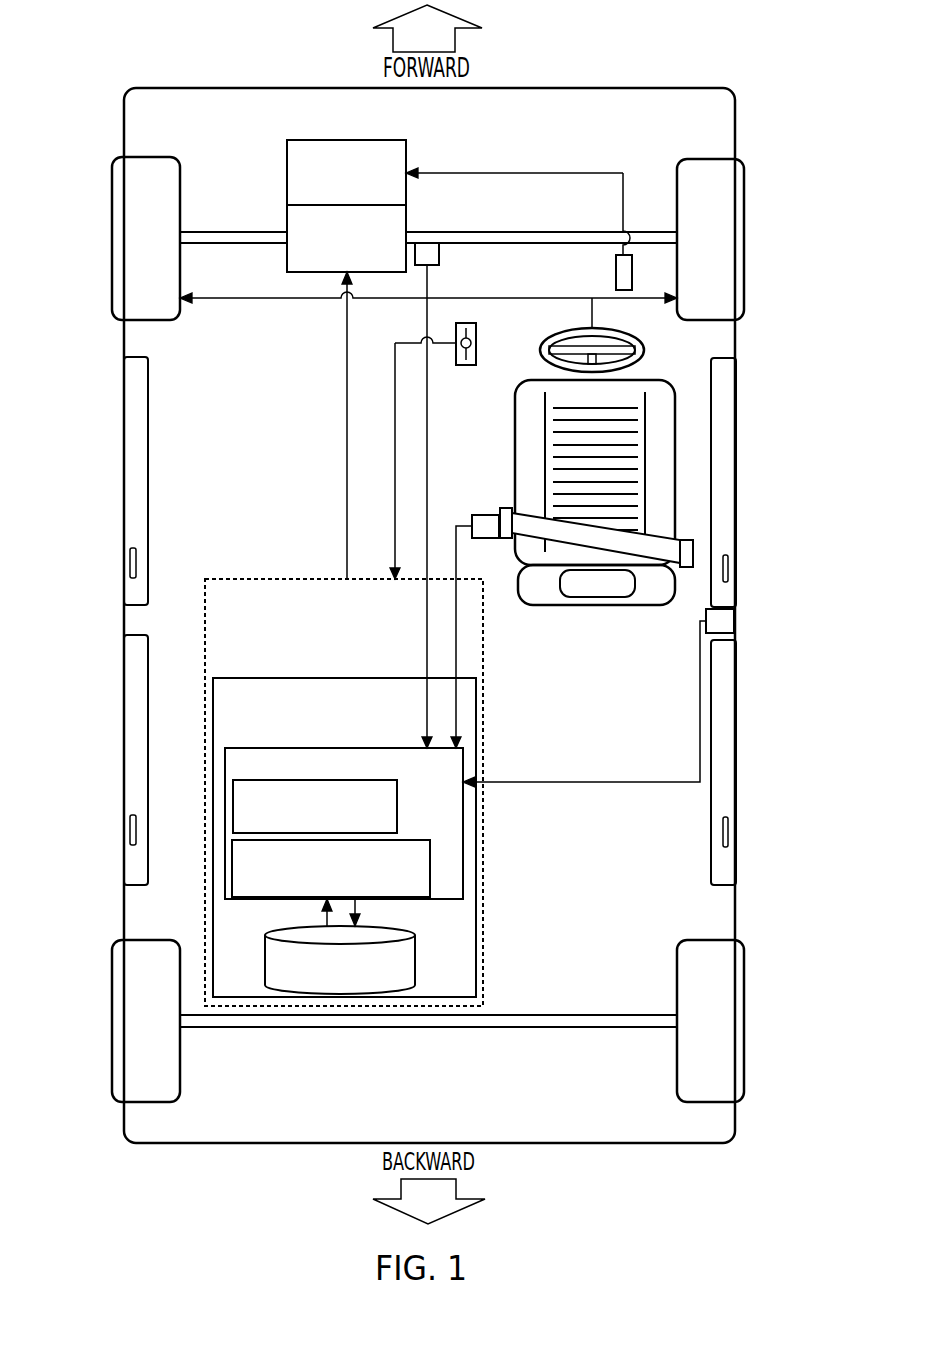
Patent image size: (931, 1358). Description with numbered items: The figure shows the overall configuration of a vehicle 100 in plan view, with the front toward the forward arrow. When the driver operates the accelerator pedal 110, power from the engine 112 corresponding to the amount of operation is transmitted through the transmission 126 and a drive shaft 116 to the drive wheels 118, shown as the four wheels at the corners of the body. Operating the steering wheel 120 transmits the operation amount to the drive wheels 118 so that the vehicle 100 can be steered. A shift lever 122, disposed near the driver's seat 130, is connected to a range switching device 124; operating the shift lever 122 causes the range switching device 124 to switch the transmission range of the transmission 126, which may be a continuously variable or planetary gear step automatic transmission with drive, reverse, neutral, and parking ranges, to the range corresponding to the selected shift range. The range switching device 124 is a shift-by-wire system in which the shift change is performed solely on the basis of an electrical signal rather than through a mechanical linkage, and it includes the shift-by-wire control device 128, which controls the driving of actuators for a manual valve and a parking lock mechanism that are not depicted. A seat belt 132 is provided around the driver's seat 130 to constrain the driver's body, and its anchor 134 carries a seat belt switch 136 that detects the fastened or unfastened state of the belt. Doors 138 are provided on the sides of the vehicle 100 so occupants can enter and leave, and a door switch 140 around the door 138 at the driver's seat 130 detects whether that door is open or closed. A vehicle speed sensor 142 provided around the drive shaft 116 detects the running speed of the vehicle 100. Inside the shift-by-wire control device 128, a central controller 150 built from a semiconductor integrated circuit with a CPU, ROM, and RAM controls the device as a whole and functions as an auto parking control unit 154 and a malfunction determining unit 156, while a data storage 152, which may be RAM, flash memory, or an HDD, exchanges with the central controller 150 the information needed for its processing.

The vehicle 100 is at (250, 63).
The accelerator pedal 110 is at (614, 278).
The engine 112 is at (407, 150).
The drive shaft 116 is at (214, 232).
The drive wheels 118 is at (112, 165).
The steering wheel 120 is at (542, 345).
The shift lever 122 is at (477, 355).
The range switching device 124 is at (217, 578).
The transmission 126 is at (407, 214).
The shift-by-wire control device 128 is at (218, 676).
The driver's seat 130 is at (515, 398).
The seat belt 132 is at (517, 516).
The anchor 134 is at (504, 508).
The seat belt switch 136 is at (487, 539).
The doors 138 is at (124, 510).
The door switch 140 is at (733, 613).
The vehicle speed sensor 142 is at (440, 255).
The central controller 150 is at (395, 748).
The data storage 152 is at (416, 966).
The auto parking control unit 154 is at (398, 798).
The malfunction determining unit 156 is at (406, 840).